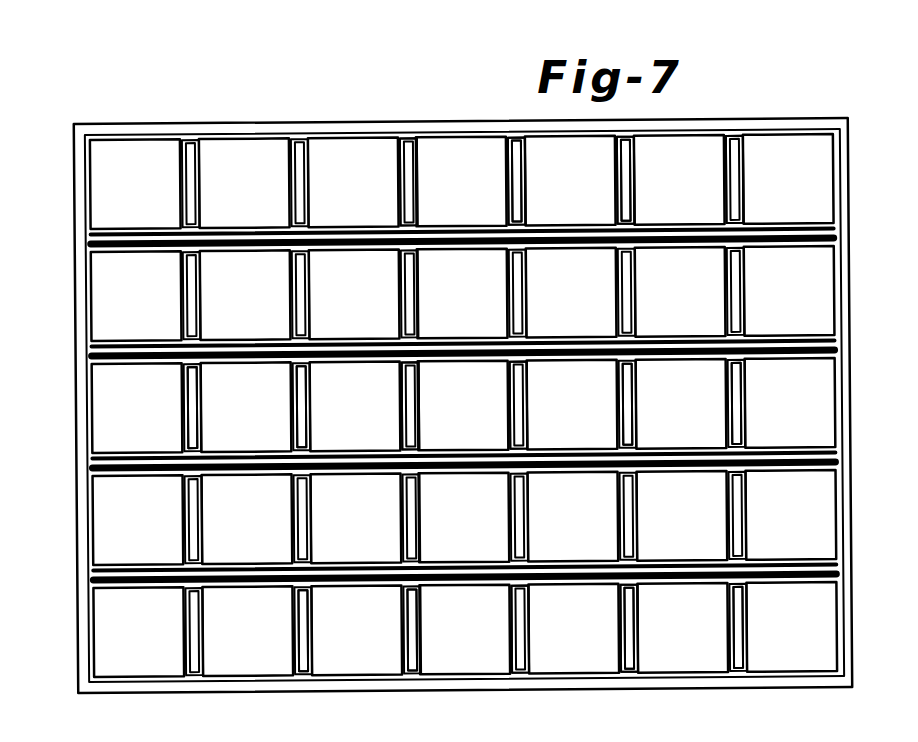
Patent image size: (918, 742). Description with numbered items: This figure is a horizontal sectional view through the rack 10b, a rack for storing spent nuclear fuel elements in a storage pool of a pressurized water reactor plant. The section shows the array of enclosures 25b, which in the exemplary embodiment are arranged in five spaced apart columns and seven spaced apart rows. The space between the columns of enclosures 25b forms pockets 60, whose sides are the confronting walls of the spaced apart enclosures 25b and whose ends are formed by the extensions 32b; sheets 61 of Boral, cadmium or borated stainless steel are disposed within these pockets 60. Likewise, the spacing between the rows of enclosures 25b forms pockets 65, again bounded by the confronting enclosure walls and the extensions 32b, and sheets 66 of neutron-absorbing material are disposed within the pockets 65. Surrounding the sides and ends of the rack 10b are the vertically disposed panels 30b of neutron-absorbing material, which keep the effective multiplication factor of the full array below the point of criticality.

The rack 10b is at (816, 104).
The enclosure 25b is at (839, 153).
The panel 30b is at (394, 127).
The extension 32b is at (297, 133).
The pocket 60 is at (469, 242).
The sheet 61 is at (574, 238).
The pocket 65 is at (514, 192).
The sheet 66 is at (628, 204).